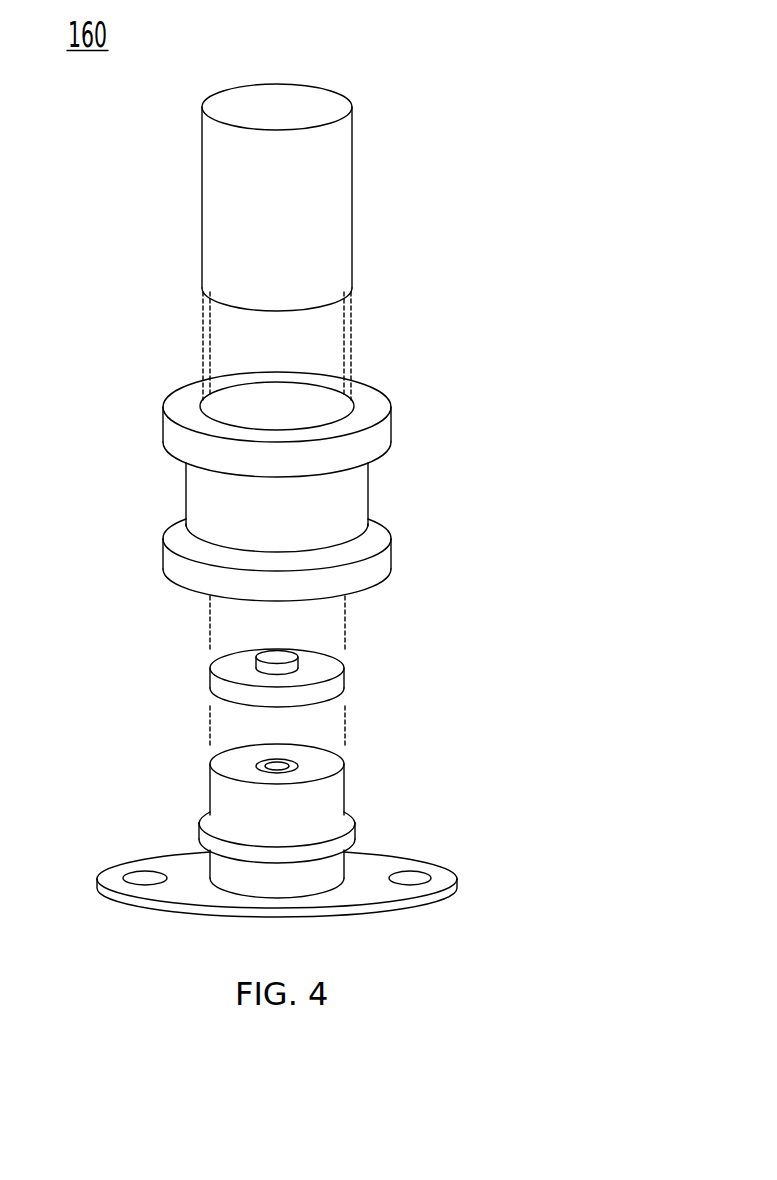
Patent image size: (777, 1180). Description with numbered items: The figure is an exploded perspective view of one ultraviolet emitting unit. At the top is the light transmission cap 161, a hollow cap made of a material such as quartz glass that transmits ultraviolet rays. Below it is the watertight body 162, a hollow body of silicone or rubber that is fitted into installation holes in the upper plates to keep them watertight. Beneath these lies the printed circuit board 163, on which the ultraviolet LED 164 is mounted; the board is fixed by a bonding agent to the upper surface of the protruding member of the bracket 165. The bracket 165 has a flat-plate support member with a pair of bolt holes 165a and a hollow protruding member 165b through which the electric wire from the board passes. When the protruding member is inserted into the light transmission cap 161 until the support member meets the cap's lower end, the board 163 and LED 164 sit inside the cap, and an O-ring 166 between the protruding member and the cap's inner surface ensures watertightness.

The light transmission cap 161 is at (343, 187).
The watertight body 162 is at (369, 480).
The printed circuit board 163 is at (343, 697).
The ultraviolet LED 164 is at (292, 651).
The bracket 165 is at (373, 868).
The bolt holes 165a is at (144, 868).
The center hole 165b is at (298, 758).
The O-ring 166 is at (203, 838).